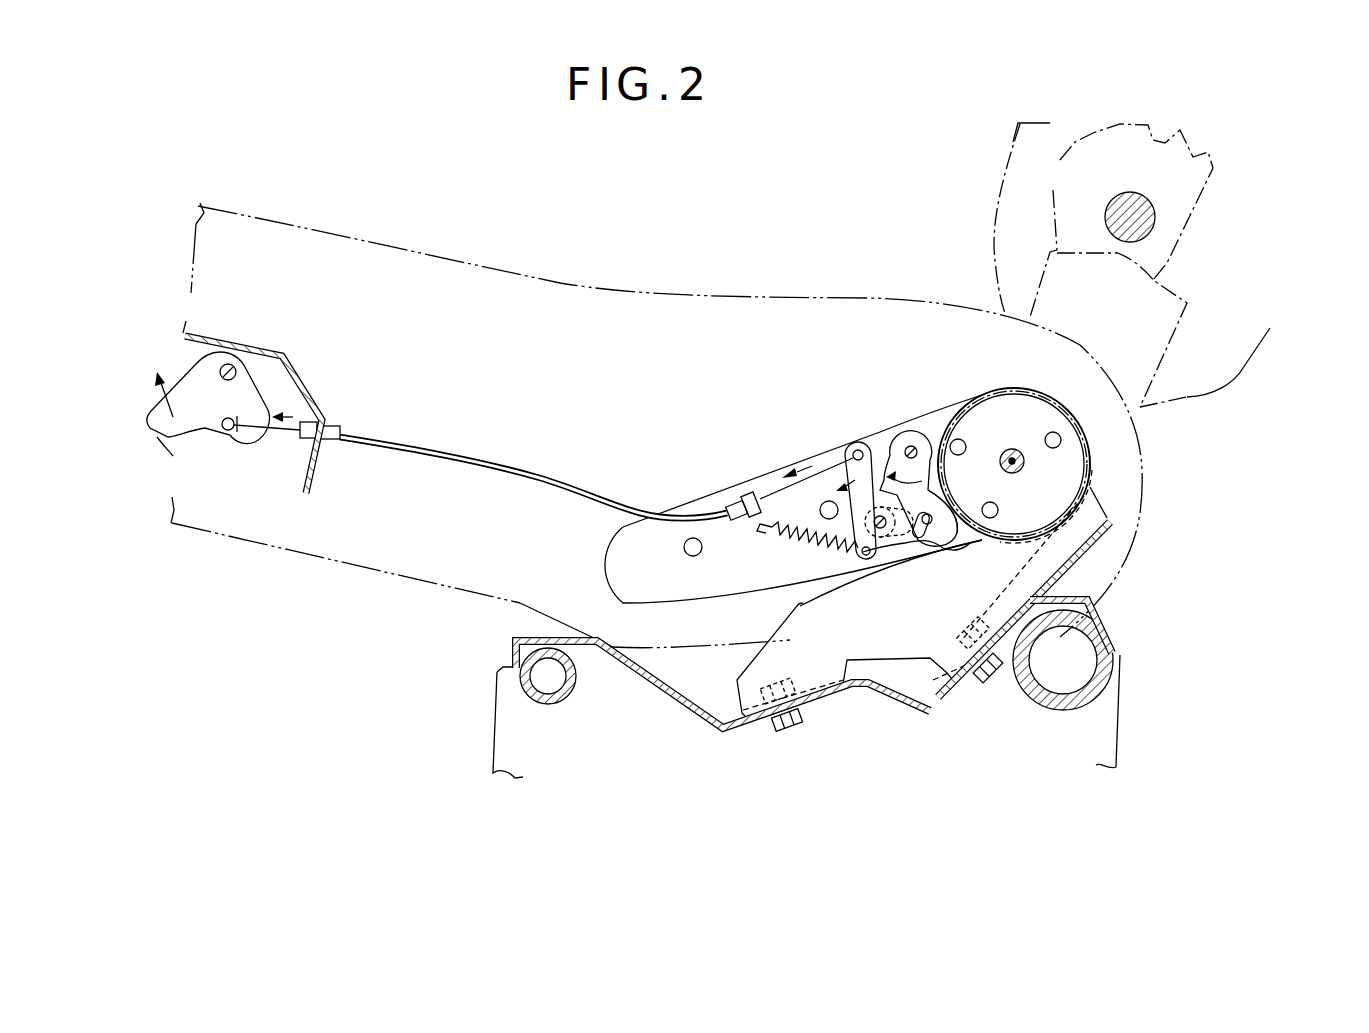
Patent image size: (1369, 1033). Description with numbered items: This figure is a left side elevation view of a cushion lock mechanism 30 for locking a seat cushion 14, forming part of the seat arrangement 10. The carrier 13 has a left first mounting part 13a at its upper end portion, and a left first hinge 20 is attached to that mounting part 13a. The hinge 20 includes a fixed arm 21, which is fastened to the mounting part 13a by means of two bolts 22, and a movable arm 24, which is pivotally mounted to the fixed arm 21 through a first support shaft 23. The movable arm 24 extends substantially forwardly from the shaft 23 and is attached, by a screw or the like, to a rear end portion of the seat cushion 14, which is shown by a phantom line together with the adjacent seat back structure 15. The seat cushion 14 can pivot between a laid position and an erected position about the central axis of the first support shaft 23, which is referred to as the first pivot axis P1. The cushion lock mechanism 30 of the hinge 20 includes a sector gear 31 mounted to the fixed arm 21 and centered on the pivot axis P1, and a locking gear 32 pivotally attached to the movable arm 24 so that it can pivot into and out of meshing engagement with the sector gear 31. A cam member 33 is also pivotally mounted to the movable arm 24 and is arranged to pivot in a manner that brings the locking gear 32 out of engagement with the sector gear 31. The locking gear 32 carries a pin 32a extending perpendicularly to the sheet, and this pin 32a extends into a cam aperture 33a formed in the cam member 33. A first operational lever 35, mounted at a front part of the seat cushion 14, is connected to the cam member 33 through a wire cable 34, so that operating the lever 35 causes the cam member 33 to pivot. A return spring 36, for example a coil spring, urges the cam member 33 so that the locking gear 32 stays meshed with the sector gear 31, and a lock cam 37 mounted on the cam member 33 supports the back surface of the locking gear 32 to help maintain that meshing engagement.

The seat reclining device 10 is at (376, 126).
The carrier 13 is at (494, 740).
The first mounting part 13a is at (659, 694).
The seat cushion 14 is at (373, 240).
The seat back side member 15 is at (1013, 142).
The first hinge 20 is at (1062, 586).
The fixed arm 21 is at (1037, 557).
The bolts 22 is at (790, 730).
The first support shaft 23 is at (1012, 448).
The movable arm 24 is at (617, 558).
The cushion lock mechanism 30 is at (1002, 380).
The sector gear 31 is at (987, 404).
The locking gear 32 is at (930, 423).
The pin 32a is at (958, 534).
The cam member 33 is at (876, 462).
The cam aperture 33a is at (932, 540).
The wire cable 34 is at (760, 494).
The first operational lever 35 is at (193, 427).
The return spring 36 is at (792, 530).
The lock cam 37 is at (887, 532).
The first pivot axis P1 is at (1018, 454).